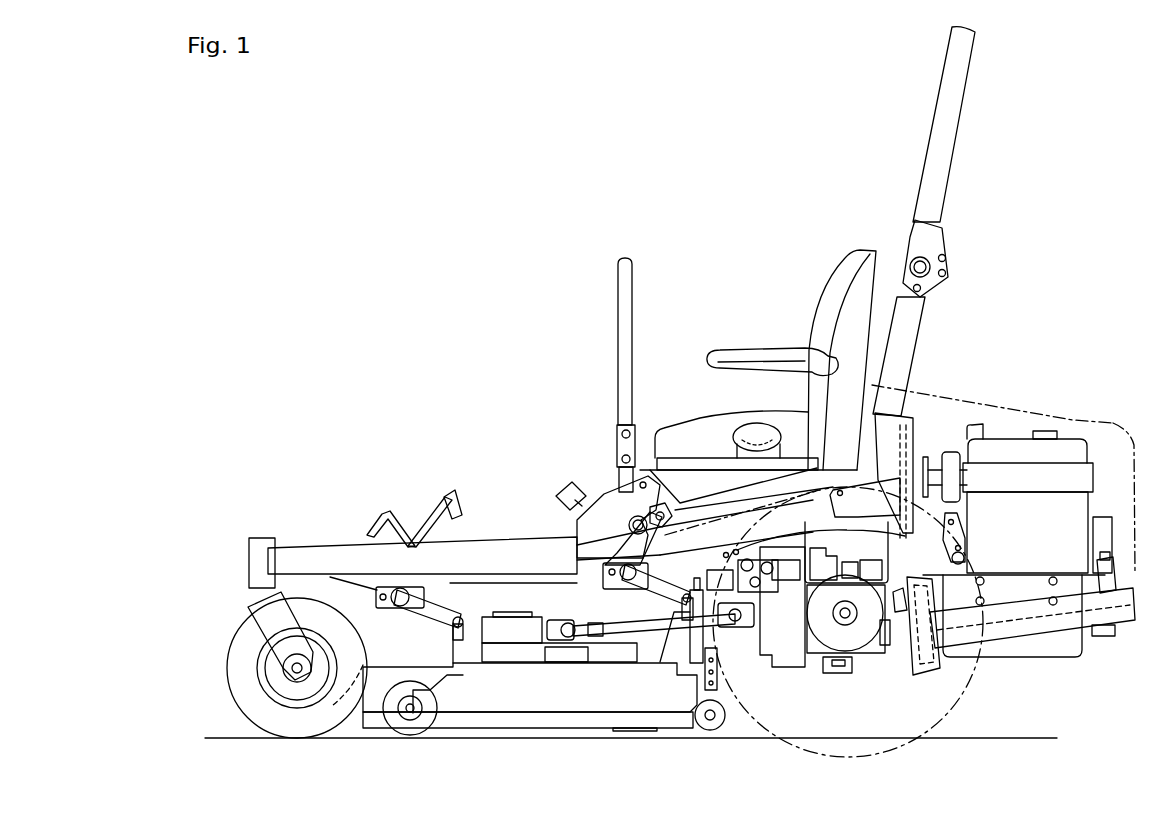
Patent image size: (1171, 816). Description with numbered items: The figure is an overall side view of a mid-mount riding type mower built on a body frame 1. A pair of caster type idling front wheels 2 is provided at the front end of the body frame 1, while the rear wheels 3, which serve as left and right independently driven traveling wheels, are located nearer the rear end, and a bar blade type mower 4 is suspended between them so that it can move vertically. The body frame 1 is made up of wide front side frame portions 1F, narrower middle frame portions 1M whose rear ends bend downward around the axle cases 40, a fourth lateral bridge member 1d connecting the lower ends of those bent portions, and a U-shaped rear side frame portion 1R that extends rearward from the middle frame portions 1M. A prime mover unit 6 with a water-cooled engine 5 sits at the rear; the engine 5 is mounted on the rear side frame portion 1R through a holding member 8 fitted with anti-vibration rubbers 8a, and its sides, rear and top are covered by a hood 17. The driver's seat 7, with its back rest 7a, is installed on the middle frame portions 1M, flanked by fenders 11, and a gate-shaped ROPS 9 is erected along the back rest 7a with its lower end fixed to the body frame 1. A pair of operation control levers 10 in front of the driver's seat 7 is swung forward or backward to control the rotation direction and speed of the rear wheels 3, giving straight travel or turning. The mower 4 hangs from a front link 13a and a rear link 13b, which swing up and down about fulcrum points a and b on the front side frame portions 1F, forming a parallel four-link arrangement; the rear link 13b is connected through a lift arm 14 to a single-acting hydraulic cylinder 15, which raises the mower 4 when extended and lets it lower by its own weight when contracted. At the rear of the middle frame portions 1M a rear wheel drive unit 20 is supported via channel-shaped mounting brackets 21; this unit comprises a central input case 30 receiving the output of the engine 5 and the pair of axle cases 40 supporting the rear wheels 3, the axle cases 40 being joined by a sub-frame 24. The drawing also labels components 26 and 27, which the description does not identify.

The body frame 1 is at (478, 538).
The front side frame portions 1F is at (333, 545).
The rear side frame portion 1R is at (1043, 640).
The middle frame portions 1M is at (802, 470).
The fourth lateral bridge member 1d is at (1012, 635).
The front wheels 2 is at (228, 674).
The rear wheels 3 is at (950, 710).
The bar blade type mower 4 is at (518, 598).
The water-cooled engine 5 is at (1087, 505).
The prime mover unit 6 is at (1010, 385).
The driver's seat 7 is at (702, 408).
The back rest 7a is at (826, 282).
The holding member 8 is at (1040, 574).
The anti-vibration rubbers 8a is at (965, 568).
The ROPS 9 is at (940, 115).
The operation control levers 10 is at (618, 306).
The fenders 11 is at (722, 470).
The front link 13a is at (430, 613).
The rear link 13b is at (657, 590).
The lift arm 14 is at (650, 512).
The hydraulic cylinder 15 is at (697, 497).
The hood 17 is at (1073, 398).
The rear wheel drive unit 20 is at (866, 682).
The mounting brackets 21 is at (778, 548).
The sub-frame 24 is at (832, 673).
The lever housing 26 is at (845, 566).
The drive shaft 27 is at (756, 630).
The central input case 30 is at (786, 667).
The axle cases 40 is at (872, 630).
The fulcrum point a is at (392, 590).
The fulcrum point b is at (615, 549).